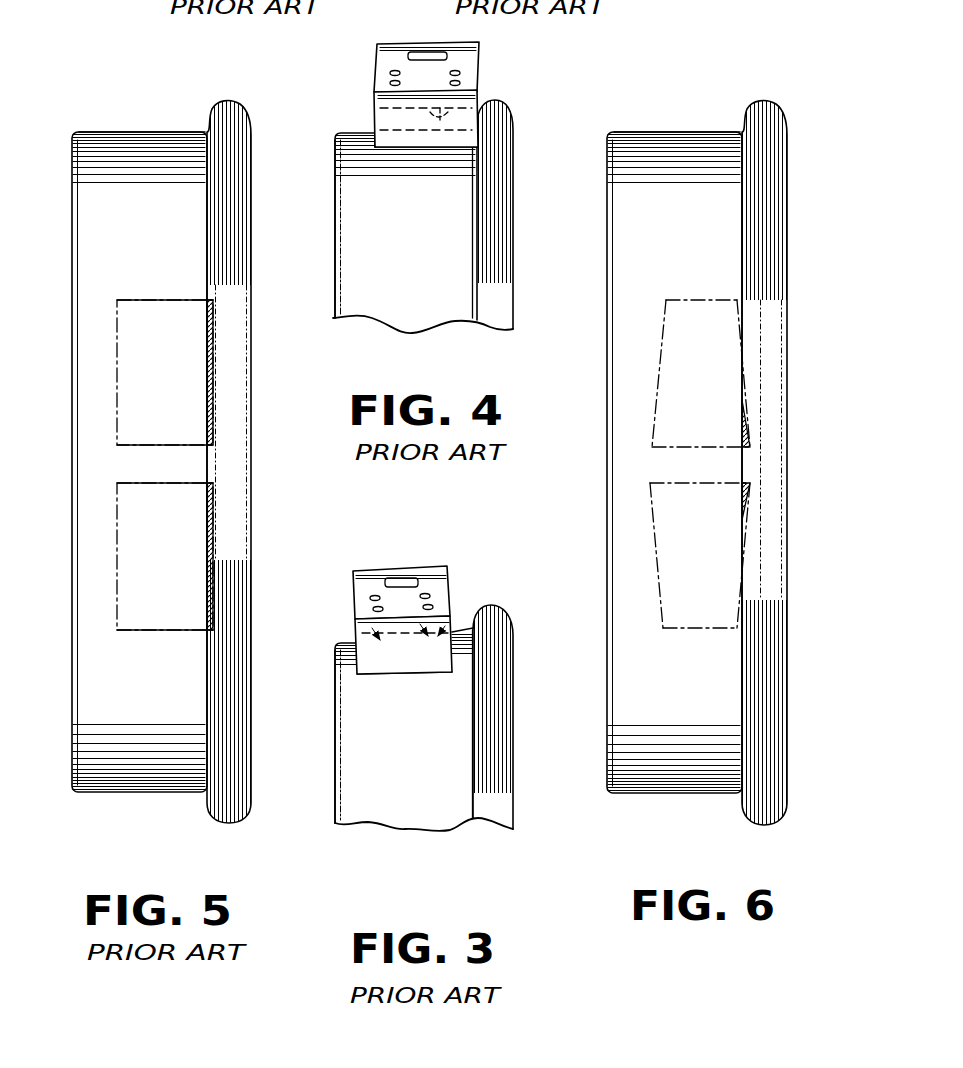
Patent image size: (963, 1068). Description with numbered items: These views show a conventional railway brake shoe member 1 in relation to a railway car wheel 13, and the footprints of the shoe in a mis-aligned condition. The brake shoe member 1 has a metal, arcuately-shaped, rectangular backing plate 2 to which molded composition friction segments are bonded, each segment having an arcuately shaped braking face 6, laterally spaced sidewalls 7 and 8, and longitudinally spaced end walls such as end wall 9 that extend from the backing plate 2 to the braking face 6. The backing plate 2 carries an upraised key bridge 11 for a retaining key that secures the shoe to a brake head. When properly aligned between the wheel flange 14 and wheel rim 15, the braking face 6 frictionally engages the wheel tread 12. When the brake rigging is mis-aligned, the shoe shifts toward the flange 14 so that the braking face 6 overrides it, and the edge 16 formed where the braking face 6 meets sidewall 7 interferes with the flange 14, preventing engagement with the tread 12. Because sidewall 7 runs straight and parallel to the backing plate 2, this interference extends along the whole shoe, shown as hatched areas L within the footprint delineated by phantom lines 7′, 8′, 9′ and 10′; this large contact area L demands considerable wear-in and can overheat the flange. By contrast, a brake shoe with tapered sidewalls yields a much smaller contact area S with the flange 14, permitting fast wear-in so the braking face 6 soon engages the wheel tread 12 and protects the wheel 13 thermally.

In FIG. 4, the brake shoe member 1 is at (440, 36).
In FIG. 3, the brake shoe member 1 is at (392, 565).
In FIG. 4, the backing plate 2 is at (383, 82).
In FIG. 3, the backing plate 2 is at (366, 612).
In FIG. 4, the braking face 6 is at (480, 85).
In FIG. 3, the braking face 6 is at (447, 612).
In FIG. 4, the sidewall 7 is at (477, 118).
In FIG. 3, the sidewall 7 is at (455, 629).
In FIG. 4, the sidewall 8 is at (375, 108).
In FIG. 3, the sidewall 8 is at (356, 656).
In FIG. 4, the end wall 9 is at (443, 148).
In FIG. 3, the end wall 9 is at (440, 672).
In FIG. 4, the key bridge 11 is at (478, 55).
In FIG. 3, the key bridge 11 is at (440, 574).
In FIG. 5, the wheel tread 12 is at (138, 132).
In FIG. 6, the wheel tread 12 is at (672, 132).
In FIG. 4, the wheel tread 12 is at (372, 120).
In FIG. 3, the wheel tread 12 is at (356, 621).
In FIG. 5, the wheel 13 is at (60, 156).
In FIG. 6, the wheel 13 is at (800, 160).
In FIG. 4, the wheel 13 is at (380, 288).
In FIG. 3, the wheel 13 is at (370, 790).
In FIG. 5, the wheel flange 14 is at (238, 460).
In FIG. 6, the wheel flange 14 is at (775, 463).
In FIG. 4, the wheel flange 14 is at (500, 128).
In FIG. 3, the wheel flange 14 is at (508, 648).
In FIG. 4, the wheel rim 15 is at (335, 218).
In FIG. 3, the wheel rim 15 is at (336, 728).
In FIG. 4, the edge 16 is at (375, 147).
In FIG. 5, the phantom line 7′ is at (214, 404).
In FIG. 6, the phantom line 7′ is at (738, 313).
In FIG. 5, the phantom line 8′ is at (117, 393).
In FIG. 6, the phantom line 8′ is at (657, 375).
In FIG. 5, the phantom line 9′ is at (133, 300).
In FIG. 6, the phantom line 9′ is at (744, 300).
In FIG. 5, the phantom line 10′ is at (137, 483).
In FIG. 6, the phantom line 10′ is at (672, 483).
In FIG. 5, the hatched area of interference L is at (214, 371).
In FIG. 6, the area of contact S is at (747, 425).